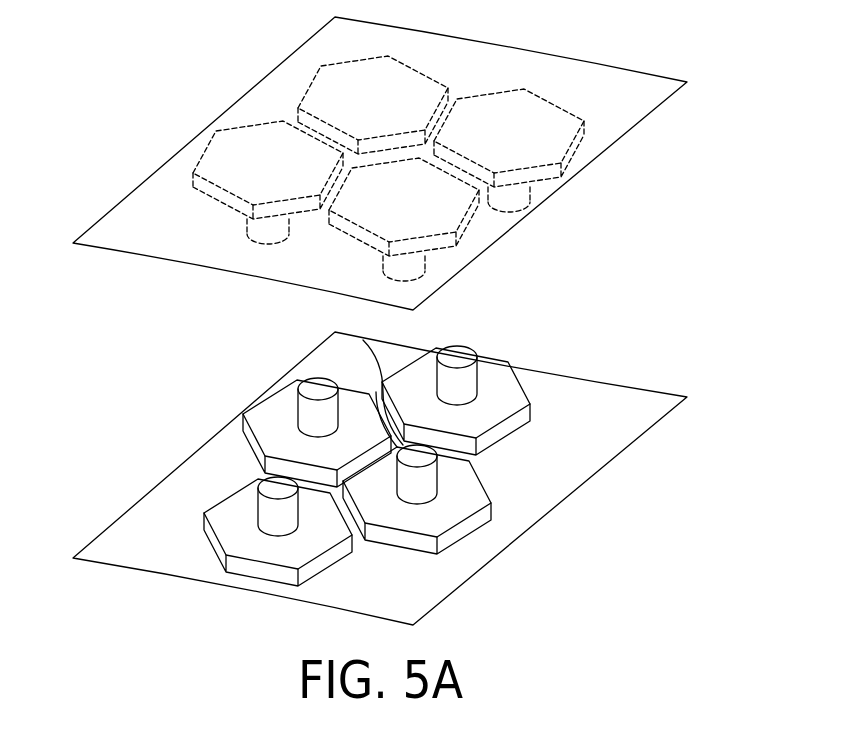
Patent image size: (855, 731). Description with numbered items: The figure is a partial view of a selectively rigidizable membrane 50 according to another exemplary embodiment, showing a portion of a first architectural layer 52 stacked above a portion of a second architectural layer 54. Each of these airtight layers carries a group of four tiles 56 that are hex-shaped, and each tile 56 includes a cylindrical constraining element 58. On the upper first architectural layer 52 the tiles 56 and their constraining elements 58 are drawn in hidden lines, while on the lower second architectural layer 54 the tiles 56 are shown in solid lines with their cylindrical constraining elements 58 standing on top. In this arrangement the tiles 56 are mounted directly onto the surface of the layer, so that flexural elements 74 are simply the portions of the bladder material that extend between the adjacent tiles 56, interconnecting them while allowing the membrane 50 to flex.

The selectively rigidizable membrane 50 is at (92, 598).
The first architectural layer 52 is at (555, 108).
The second architectural layer 54 is at (523, 381).
The tile 56 is at (355, 82).
The cylindrical constraining element 58 is at (525, 198).
The flexural element 74 is at (298, 110).